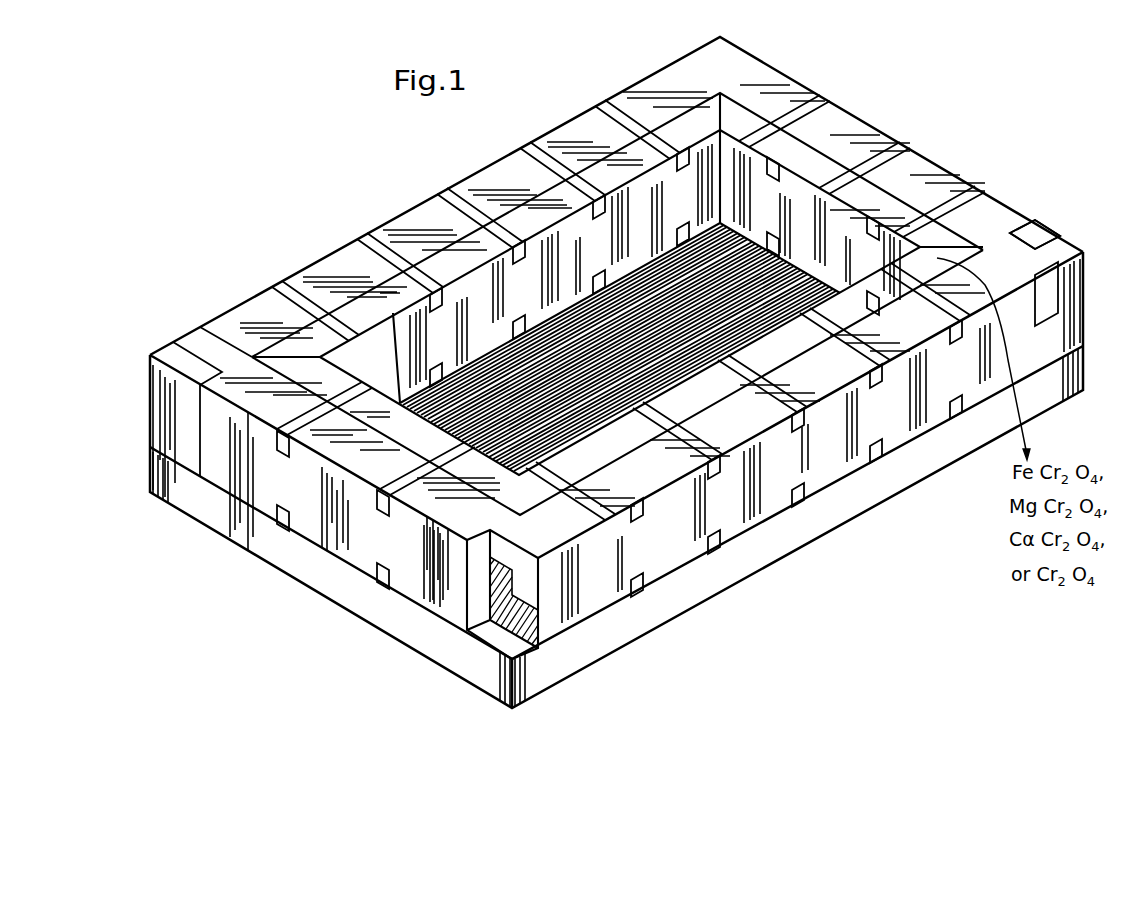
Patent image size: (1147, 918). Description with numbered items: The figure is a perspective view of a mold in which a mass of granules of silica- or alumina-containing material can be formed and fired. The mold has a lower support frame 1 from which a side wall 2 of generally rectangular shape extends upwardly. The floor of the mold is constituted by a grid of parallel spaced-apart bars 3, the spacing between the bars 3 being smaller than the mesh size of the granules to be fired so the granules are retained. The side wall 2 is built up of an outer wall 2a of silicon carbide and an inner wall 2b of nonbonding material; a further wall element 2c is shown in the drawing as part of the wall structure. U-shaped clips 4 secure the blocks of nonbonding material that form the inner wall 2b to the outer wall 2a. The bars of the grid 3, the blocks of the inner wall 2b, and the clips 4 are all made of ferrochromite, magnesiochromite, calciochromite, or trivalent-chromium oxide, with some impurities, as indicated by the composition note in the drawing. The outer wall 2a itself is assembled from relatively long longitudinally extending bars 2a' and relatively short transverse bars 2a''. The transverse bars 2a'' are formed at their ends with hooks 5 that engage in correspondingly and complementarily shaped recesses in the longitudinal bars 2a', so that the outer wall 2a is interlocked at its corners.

The lower support frame 1 is at (910, 468).
The side wall 2 is at (1084, 314).
The outer wall 2a is at (1038, 219).
The longitudinally extending bars 2a' is at (797, 497).
The transverse bars 2a'' is at (403, 587).
The inner wall 2b is at (928, 228).
The brick 2c is at (845, 210).
The grid of parallel spaced-apart bars 3 is at (733, 242).
The U-shaped clips 4 is at (835, 123).
The hooks 5 is at (553, 570).